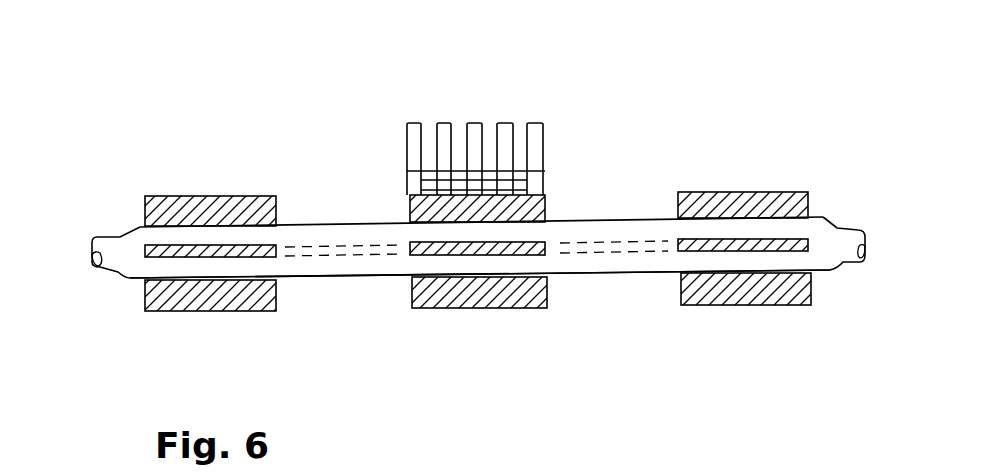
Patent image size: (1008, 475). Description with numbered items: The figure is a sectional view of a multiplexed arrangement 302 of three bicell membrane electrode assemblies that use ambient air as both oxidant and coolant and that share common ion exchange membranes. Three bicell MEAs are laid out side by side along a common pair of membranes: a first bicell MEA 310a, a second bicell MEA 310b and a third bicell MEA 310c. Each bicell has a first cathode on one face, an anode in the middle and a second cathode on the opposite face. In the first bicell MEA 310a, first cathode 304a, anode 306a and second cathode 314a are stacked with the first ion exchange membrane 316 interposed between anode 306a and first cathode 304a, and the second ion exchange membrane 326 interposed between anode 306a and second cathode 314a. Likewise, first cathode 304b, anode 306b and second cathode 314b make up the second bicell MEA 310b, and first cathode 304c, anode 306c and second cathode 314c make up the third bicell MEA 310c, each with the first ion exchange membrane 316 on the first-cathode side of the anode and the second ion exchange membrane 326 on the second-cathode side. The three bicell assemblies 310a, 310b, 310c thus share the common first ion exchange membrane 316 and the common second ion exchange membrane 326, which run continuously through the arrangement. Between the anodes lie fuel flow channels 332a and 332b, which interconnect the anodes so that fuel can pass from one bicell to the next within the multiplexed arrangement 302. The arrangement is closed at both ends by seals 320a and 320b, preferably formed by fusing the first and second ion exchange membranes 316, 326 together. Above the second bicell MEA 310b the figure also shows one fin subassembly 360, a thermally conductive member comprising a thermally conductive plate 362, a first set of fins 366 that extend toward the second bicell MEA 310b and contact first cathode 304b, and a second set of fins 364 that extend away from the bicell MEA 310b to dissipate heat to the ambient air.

The multiplexed arrangement 302 is at (120, 286).
The first cathode 304a is at (162, 197).
The first cathode 304b is at (415, 205).
The first cathode 304c is at (797, 190).
The anode 306a is at (265, 253).
The anode 306b is at (535, 253).
The anode 306c is at (808, 252).
The first bicell MEA 310a is at (202, 228).
The second bicell MEA 310b is at (462, 218).
The third bicell MEA 310c is at (794, 224).
The second cathode 314a is at (172, 303).
The second cathode 314b is at (413, 300).
The second cathode 314c is at (790, 298).
The first ion exchange membrane 316 is at (132, 228).
The seal 320a is at (92, 253).
The seal 320b is at (865, 245).
The second ion exchange membrane 326 is at (641, 272).
The fuel flow channel 332a is at (305, 245).
The fuel flow channel 332b is at (620, 247).
The fin subassembly 360 is at (528, 107).
The thermally conductive plate 362 is at (523, 177).
The second set of fins 364 is at (545, 132).
The first set of fins 366 is at (540, 190).